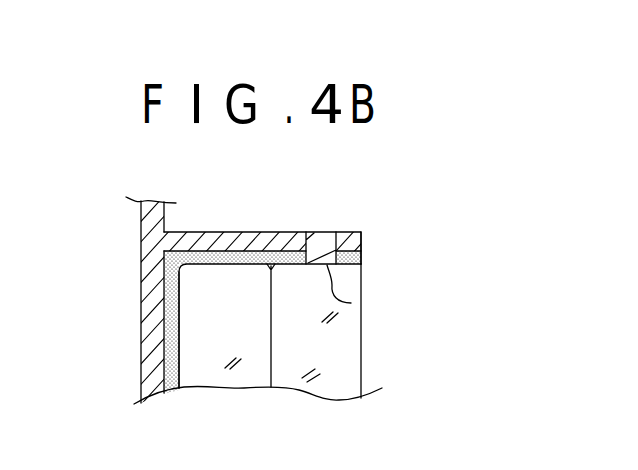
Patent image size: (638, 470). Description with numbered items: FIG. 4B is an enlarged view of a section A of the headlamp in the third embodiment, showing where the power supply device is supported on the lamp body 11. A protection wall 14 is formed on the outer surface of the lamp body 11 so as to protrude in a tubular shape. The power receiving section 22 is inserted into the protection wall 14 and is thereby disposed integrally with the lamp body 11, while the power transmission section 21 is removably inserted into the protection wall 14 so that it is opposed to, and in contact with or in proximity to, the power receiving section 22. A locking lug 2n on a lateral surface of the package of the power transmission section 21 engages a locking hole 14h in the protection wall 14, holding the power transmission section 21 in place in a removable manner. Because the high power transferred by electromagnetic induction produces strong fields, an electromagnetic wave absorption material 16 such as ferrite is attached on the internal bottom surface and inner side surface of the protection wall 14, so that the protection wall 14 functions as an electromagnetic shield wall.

The lamp body 11 is at (142, 226).
The protection wall 14 is at (213, 242).
The locking hole 14h is at (307, 233).
The section A is at (369, 224).
The electromagnetic wave absorption material 16 is at (177, 327).
The power receiving section 22 is at (233, 378).
The power transmission section 21 is at (337, 384).
The locking lug 2n is at (352, 303).